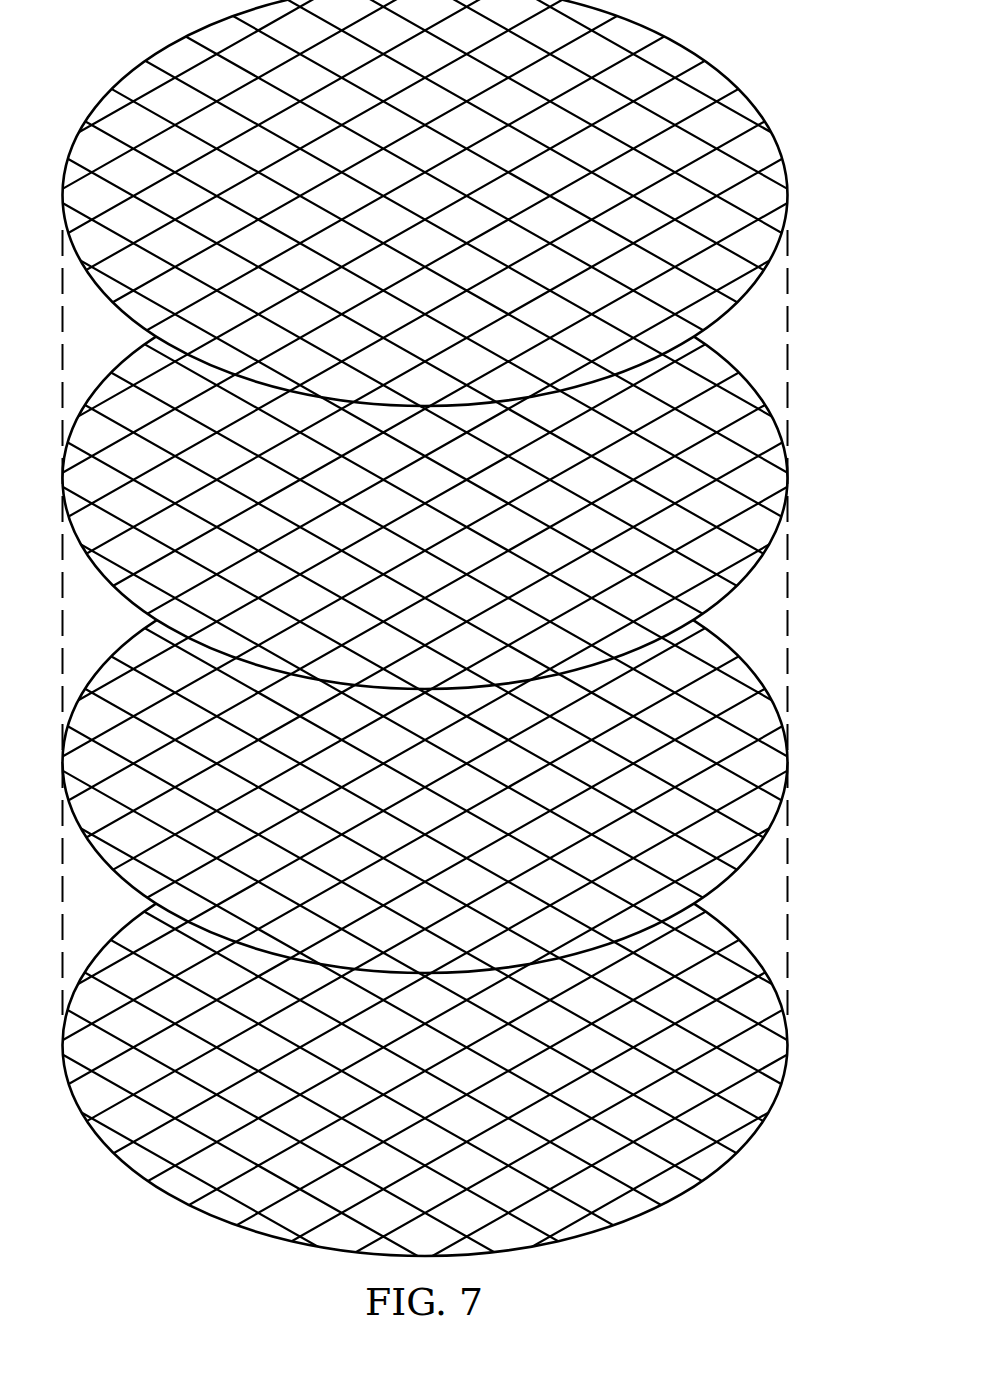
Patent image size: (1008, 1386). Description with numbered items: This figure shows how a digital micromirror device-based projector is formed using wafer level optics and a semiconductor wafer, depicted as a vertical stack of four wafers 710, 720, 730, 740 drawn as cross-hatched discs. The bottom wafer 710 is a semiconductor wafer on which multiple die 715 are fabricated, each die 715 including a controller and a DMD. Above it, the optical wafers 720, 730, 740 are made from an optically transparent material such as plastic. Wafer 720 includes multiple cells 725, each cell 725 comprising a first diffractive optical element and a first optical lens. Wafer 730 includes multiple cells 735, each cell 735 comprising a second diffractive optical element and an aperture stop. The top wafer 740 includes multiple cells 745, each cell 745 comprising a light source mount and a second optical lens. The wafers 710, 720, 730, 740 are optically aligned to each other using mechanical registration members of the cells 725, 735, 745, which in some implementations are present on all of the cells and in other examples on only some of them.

The wafer 710 is at (788, 1070).
The die 715 is at (425, 1045).
The wafer 720 is at (788, 787).
The cell 725 is at (425, 762).
The wafer 730 is at (788, 455).
The cell 735 is at (425, 478).
The wafer 740 is at (788, 173).
The cell 745 is at (715, 122).